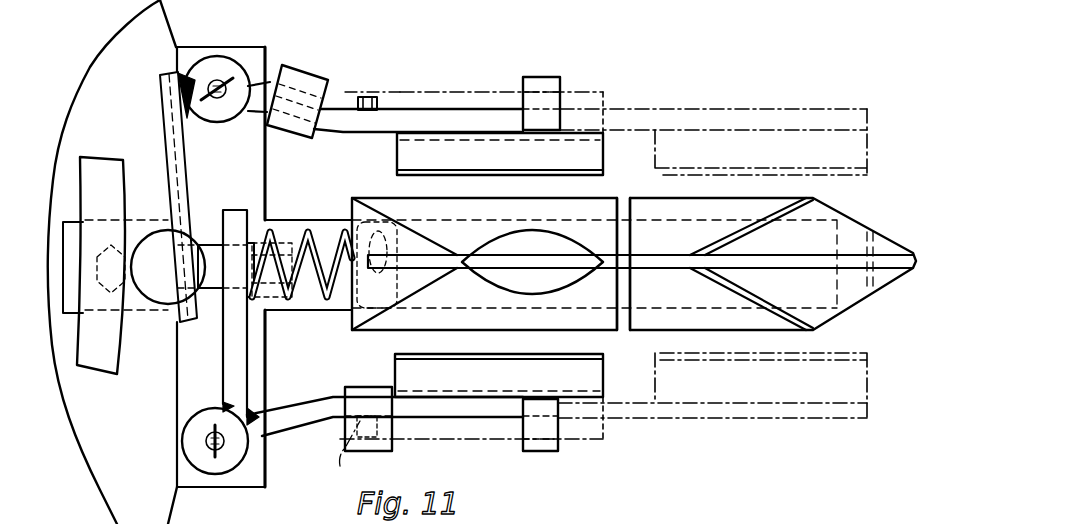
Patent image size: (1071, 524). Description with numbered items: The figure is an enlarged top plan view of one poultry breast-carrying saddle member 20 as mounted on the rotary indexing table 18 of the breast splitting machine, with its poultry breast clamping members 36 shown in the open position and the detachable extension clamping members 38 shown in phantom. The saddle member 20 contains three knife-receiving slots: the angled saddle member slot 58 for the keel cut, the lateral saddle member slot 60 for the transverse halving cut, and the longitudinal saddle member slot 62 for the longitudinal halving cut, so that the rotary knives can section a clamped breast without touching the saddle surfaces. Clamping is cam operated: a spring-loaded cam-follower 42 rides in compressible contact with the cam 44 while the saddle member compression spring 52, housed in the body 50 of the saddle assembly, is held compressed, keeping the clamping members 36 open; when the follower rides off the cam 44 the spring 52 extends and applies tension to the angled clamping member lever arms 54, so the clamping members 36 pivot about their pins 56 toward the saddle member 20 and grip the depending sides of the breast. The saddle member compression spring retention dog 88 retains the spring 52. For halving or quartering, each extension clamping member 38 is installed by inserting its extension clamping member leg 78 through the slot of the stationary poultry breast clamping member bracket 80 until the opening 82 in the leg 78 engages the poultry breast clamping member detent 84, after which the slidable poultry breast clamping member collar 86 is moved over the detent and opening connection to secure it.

The rotary indexing table 18 is at (176, 24).
The poultry breast-carrying saddle member 20 is at (858, 225).
The poultry breast clamping member 36 is at (397, 160).
The extension clamping member 38 is at (687, 168).
The spring-loaded cam-follower 42 is at (143, 298).
The cam 44 is at (107, 155).
The block 50 is at (266, 184).
The saddle member compression spring 52 is at (307, 232).
The angled clamping member lever arm 54 is at (322, 133).
The pin 56 is at (218, 80).
The angled saddle member slot 58 is at (765, 212).
The lateral saddle member slot 60 is at (625, 210).
The longitudinal saddle member slot 62 is at (462, 262).
The extension clamping member leg 78 is at (583, 92).
The stationary poultry breast clamping member bracket 80 is at (534, 77).
The opening 82 is at (389, 96).
The poultry breast clamping member detent 84 is at (365, 97).
The slidable poultry breast clamping member collar 86 is at (312, 67).
The saddle member compression spring retention dog 88 is at (215, 244).